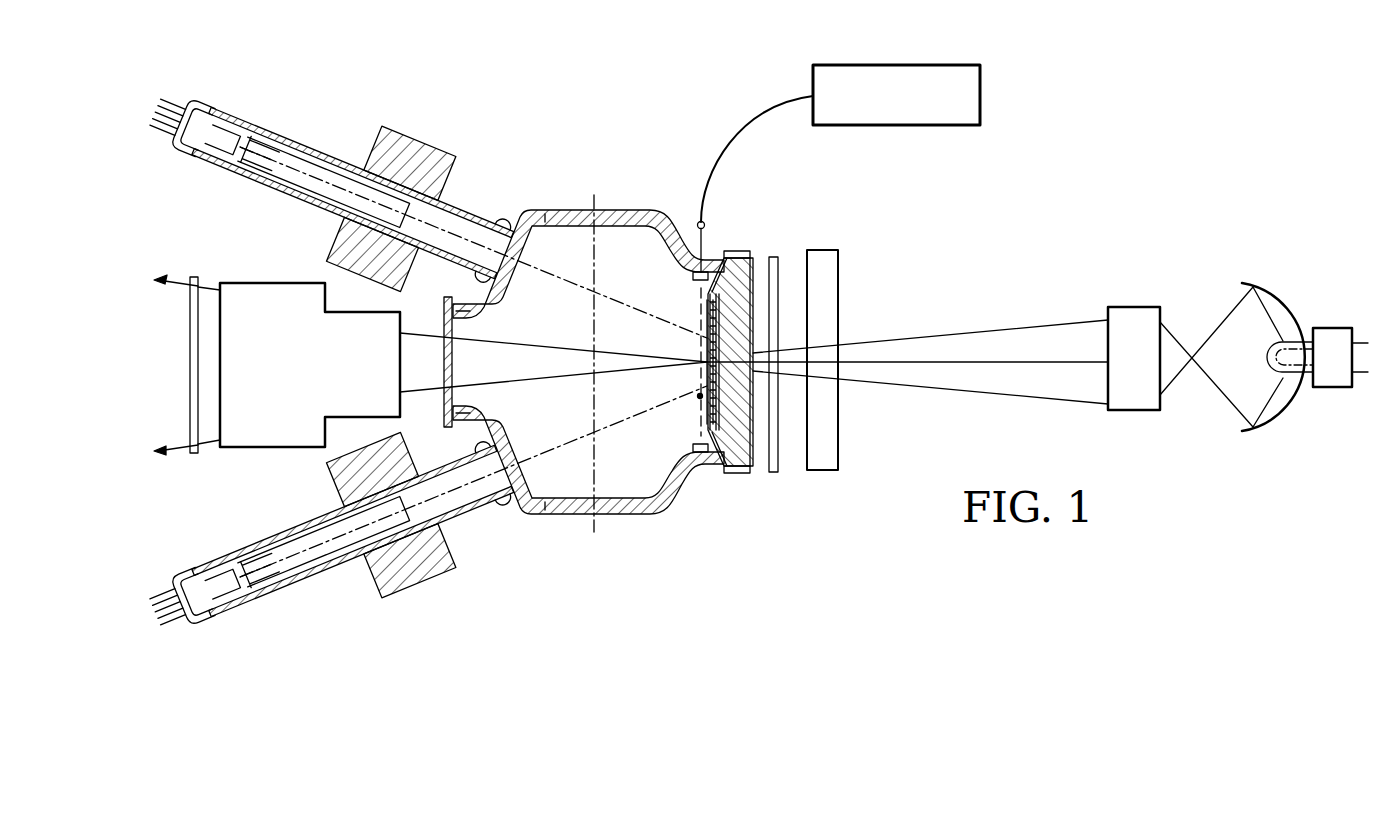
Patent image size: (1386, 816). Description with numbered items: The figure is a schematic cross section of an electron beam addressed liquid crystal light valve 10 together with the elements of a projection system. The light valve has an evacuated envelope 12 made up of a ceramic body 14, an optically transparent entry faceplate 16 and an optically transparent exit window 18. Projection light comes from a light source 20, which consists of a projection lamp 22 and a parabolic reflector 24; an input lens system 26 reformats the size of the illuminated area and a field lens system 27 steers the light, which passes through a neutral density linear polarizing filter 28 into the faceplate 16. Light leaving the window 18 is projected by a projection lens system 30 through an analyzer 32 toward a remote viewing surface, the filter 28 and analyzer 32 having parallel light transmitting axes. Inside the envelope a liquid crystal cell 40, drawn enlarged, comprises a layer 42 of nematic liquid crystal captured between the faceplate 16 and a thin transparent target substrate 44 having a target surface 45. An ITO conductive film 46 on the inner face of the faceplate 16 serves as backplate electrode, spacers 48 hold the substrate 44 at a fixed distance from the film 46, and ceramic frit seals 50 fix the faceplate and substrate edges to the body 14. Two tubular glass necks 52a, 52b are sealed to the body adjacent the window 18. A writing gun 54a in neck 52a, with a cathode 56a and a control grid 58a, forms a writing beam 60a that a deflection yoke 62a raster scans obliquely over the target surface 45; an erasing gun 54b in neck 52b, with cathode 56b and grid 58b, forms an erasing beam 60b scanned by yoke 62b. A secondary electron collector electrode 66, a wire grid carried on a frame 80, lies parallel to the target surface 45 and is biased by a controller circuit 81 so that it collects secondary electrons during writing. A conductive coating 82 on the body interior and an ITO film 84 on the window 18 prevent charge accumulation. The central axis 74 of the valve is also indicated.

The electron beam addressed liquid crystal light valve 10 is at (588, 328).
The evacuated envelope 12 is at (573, 208).
The ceramic body 14 is at (662, 511).
The faceplate 16 is at (776, 257).
The exit window 18 is at (444, 328).
The light source 20 is at (1305, 354).
The projection lamp 22 is at (1333, 330).
The parabolic reflector 24 is at (1290, 303).
The input lens system 26 is at (1147, 306).
The field lens system 27 is at (827, 423).
The neutral density linear polarizing filter 28 is at (780, 256).
The projection lens system 30 is at (306, 449).
The analyzer 32 is at (198, 283).
The liquid crystal cell 40 is at (698, 396).
The layer of nematic liquid crystal material 42 is at (706, 408).
The target substrate 44 is at (706, 375).
The target surface 45 is at (708, 345).
The conductive film 46 is at (752, 458).
The spacers 48 is at (708, 312).
The ceramic frit seals 50 is at (741, 251).
The first tubular glass neck 52a is at (480, 215).
The second tubular glass neck 52b is at (468, 519).
The writing electron gun 54a is at (320, 157).
The erasing electron gun 54b is at (314, 574).
The cathode of writing gun 56a is at (204, 130).
The cathode of erasing gun 56b is at (200, 582).
The control grid of writing gun 58a is at (222, 118).
The control grid of erasing gun 58b is at (248, 600).
The writing electron beam 60a is at (526, 289).
The erasing electron beam 60b is at (586, 436).
The electromagnetic deflection yoke 62a is at (437, 142).
The electromagnetic deflection yoke 62b is at (452, 550).
The secondary electron collector electrode 66 is at (698, 290).
The central axis 74 is at (612, 517).
The frame 80 is at (693, 274).
The collector electrode controller circuit 81 is at (877, 65).
The conductive coating 82 is at (542, 226).
The conductive film 84 is at (458, 332).